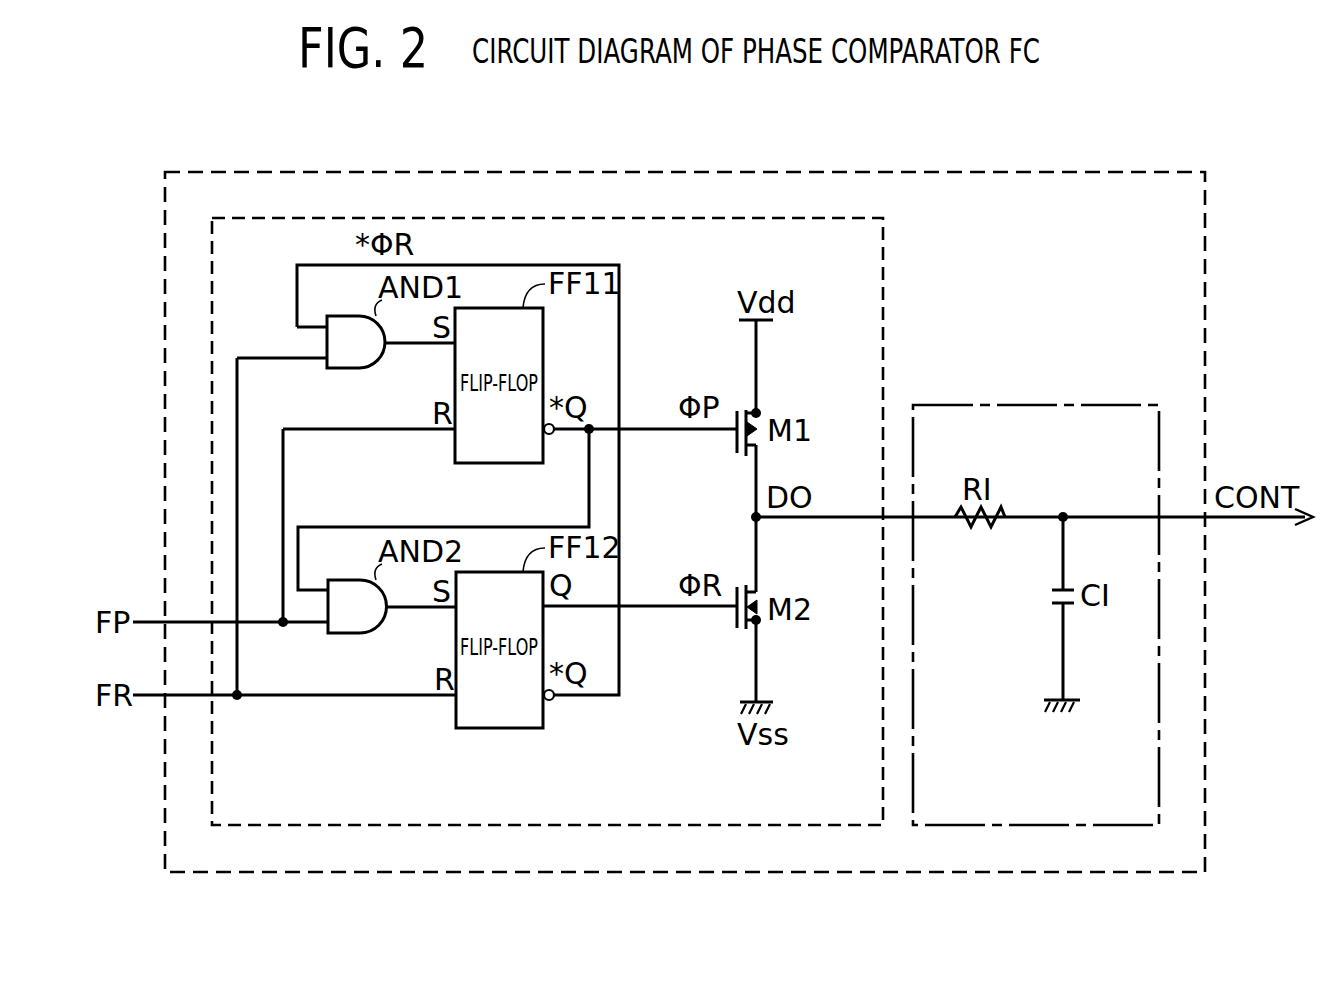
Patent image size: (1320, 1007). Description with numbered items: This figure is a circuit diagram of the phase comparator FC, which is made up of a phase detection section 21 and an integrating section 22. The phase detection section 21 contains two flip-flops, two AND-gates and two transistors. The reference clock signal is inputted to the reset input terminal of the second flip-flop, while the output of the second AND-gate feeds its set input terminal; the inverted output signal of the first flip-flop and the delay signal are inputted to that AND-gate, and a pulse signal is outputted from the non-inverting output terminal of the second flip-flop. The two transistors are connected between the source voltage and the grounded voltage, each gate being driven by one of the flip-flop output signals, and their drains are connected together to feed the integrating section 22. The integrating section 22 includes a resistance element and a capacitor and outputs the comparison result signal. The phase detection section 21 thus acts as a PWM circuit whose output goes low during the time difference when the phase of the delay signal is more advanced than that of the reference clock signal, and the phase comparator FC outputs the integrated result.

The phase detection section 21 is at (388, 217).
The integrating section 22 is at (1022, 405).
The phase comparator FC is at (608, 172).